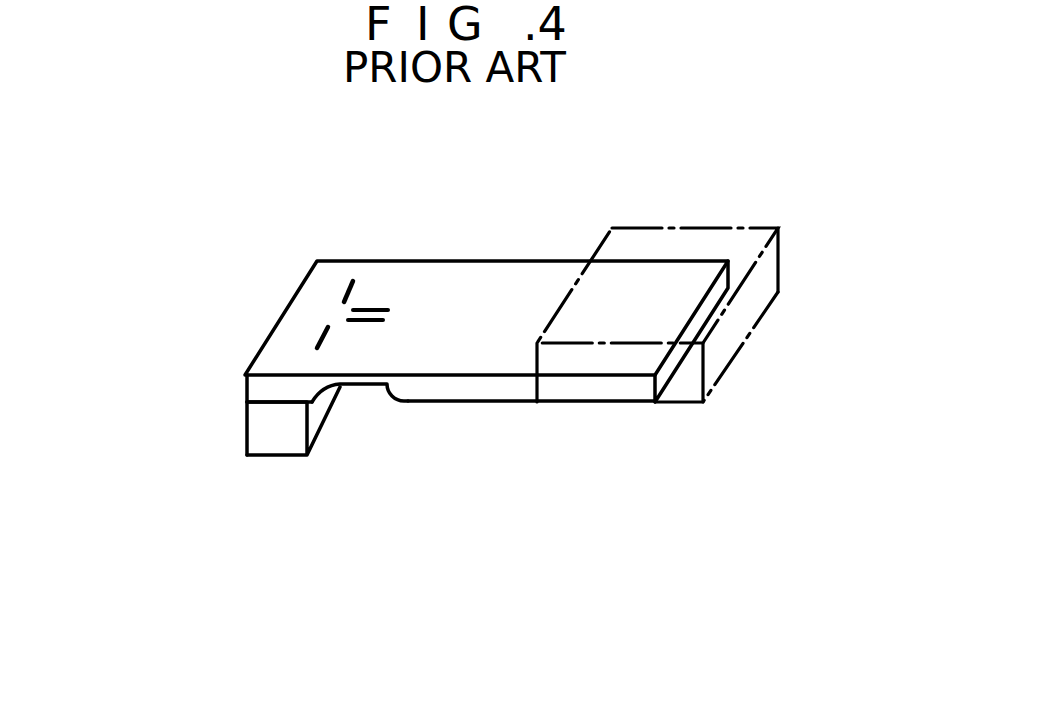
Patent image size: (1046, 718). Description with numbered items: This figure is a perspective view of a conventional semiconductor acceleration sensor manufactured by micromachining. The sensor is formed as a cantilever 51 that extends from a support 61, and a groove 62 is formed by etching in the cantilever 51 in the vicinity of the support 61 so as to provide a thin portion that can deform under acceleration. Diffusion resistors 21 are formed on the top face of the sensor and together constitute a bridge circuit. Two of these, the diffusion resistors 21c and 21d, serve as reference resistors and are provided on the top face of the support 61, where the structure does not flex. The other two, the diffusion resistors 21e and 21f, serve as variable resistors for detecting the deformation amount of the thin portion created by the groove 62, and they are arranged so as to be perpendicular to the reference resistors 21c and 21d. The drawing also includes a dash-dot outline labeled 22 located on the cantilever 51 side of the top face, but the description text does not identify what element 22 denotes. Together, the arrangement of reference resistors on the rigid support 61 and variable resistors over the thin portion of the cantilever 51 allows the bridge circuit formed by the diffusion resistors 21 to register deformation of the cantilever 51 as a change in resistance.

The diffusion resistors 21 is at (425, 342).
The diffusion resistor 21c is at (340, 293).
The diffusion resistor 21d is at (310, 338).
The diffusion resistor 21e is at (373, 295).
The diffusion resistor 21f is at (395, 322).
The semiconductor chip (outline) 22 is at (668, 255).
The cantilever 51 is at (457, 393).
The support 61 is at (288, 438).
The groove 62 is at (380, 385).